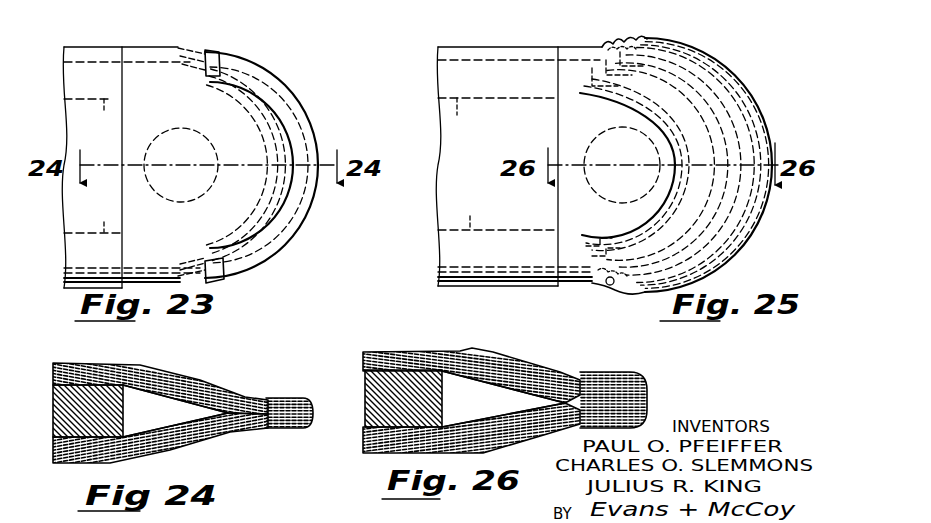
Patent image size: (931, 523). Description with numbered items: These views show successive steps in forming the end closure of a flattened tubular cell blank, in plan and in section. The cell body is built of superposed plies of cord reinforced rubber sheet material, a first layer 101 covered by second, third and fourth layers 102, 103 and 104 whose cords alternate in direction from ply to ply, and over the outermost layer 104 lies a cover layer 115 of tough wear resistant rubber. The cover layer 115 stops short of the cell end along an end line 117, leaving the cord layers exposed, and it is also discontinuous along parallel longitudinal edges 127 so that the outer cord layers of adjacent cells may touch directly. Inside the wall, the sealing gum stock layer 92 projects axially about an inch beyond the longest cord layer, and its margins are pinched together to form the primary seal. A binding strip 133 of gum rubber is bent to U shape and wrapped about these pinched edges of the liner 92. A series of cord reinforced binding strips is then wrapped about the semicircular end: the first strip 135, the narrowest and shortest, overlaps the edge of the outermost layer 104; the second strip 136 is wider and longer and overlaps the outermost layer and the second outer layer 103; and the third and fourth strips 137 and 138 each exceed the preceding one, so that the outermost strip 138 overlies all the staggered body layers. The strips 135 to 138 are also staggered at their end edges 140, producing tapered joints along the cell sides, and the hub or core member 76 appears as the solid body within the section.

In FIG. 23, the hub / core member 76 is at (208, 151).
In FIG. 25, the hub / core member 76 is at (664, 179).
In FIG. 24, the hub / core member 76 is at (55, 428).
In FIG. 26, the hub / core member 76 is at (366, 400).
In FIG. 24, the sealing gum stock layer 92 is at (175, 411).
In FIG. 26, the sealing gum stock layer 92 is at (455, 380).
In FIG. 24, the first layer 101 is at (140, 370).
In FIG. 26, the first layer 101 is at (362, 362).
In FIG. 24, the second ply material layer 102 is at (172, 378).
In FIG. 26, the second ply material layer 102 is at (362, 351).
In FIG. 24, the third ply material layer 103 is at (212, 390).
In FIG. 26, the third ply material layer 103 is at (378, 352).
In FIG. 24, the fourth ply material layer 104 is at (255, 400).
In FIG. 26, the fourth ply material layer 104 is at (415, 352).
In FIG. 23, the cover layer 115 is at (75, 258).
In FIG. 25, the cover layer 115 is at (438, 153).
In FIG. 23, the end line 117 is at (124, 205).
In FIG. 25, the end line 117 is at (558, 137).
In FIG. 23, the edges 127 is at (93, 166).
In FIG. 25, the edges 127 is at (498, 164).
In FIG. 23, the binding strip 133 is at (290, 103).
In FIG. 24, the binding strip 133 is at (290, 428).
In FIG. 26, the binding strip 133 is at (615, 401).
In FIG. 25, the first fabric binding strip 135 is at (708, 52).
In FIG. 26, the first fabric binding strip 135 is at (566, 366).
In FIG. 25, the second fabric binding strip 136 is at (585, 305).
In FIG. 26, the second fabric binding strip 136 is at (545, 357).
In FIG. 25, the third fabric binding strip 137 is at (620, 100).
In FIG. 26, the third fabric binding strip 137 is at (492, 351).
In FIG. 25, the fourth fabric binding strip 138 is at (597, 70).
In FIG. 26, the fourth fabric binding strip 138 is at (465, 349).
In FIG. 25, the end edges 140 is at (588, 283).